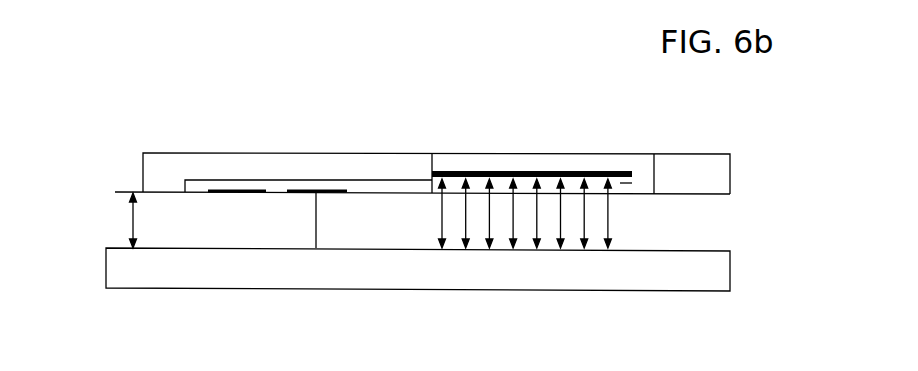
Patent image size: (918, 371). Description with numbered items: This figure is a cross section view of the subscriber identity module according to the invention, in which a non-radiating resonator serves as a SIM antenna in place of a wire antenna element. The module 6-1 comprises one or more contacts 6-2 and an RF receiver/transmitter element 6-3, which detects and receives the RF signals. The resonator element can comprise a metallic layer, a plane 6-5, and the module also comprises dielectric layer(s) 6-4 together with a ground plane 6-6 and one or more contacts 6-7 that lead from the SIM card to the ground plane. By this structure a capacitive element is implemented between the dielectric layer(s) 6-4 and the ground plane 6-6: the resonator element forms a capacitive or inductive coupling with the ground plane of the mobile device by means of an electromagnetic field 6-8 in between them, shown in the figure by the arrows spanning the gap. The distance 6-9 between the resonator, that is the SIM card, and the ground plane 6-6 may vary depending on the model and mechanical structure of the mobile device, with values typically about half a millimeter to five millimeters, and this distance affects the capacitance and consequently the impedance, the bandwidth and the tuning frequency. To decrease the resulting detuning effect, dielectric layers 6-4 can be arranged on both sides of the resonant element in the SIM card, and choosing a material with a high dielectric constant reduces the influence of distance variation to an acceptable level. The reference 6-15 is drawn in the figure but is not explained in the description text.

The module 6-1 is at (677, 154).
The contacts 6-2 is at (232, 193).
The RF receiver/transmitter element 6-3 is at (200, 186).
The dielectric layer 6-4 is at (513, 169).
The plane 6-5 is at (595, 170).
The ground plane 6-6 is at (652, 280).
The contacts from the SIM card to the ground plane 6-7 is at (316, 228).
The electromagnetic field 6-8 is at (615, 235).
The distance 6-9 is at (131, 233).
The gap / air space 6-15 is at (627, 188).